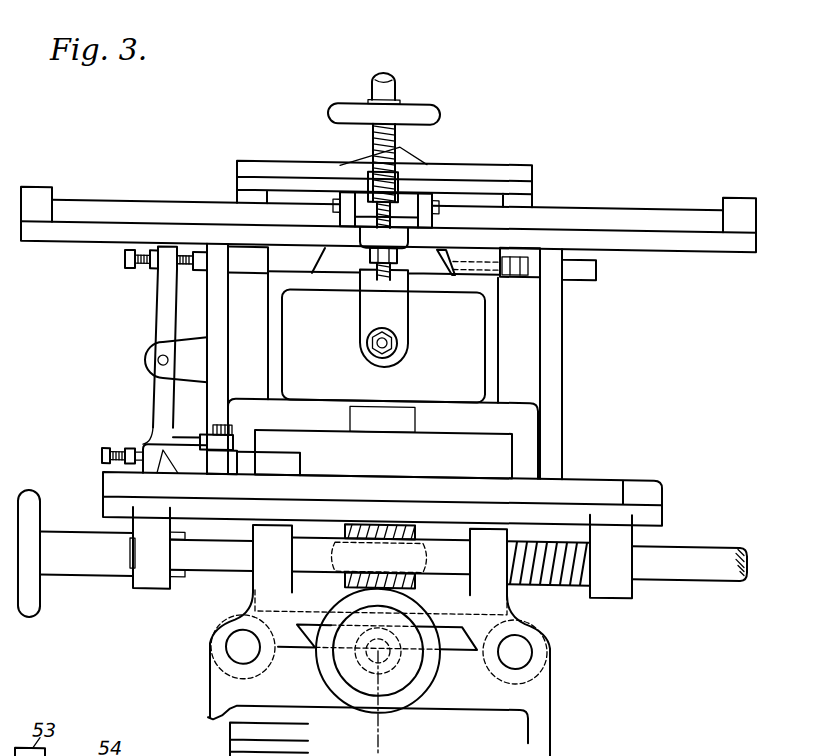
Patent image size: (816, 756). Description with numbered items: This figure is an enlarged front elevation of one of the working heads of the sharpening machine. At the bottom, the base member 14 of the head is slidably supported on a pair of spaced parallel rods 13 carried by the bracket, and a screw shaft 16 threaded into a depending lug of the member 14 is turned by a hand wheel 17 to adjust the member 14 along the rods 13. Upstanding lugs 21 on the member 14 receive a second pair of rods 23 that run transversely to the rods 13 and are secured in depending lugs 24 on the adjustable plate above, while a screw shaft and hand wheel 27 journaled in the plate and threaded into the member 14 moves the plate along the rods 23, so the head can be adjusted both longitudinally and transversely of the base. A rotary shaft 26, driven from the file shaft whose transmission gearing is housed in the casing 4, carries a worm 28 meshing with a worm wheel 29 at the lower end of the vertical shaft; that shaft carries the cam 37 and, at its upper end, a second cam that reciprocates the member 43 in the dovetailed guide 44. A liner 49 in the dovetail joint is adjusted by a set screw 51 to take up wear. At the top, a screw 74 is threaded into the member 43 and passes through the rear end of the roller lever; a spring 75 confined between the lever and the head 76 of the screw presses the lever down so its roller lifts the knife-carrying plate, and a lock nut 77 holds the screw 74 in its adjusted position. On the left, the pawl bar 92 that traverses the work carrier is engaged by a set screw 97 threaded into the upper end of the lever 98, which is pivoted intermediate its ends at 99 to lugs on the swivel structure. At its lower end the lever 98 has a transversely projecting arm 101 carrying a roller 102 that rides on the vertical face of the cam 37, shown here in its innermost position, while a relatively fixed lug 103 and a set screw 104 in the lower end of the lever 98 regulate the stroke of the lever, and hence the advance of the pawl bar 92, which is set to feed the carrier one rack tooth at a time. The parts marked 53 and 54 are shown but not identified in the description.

The casing 4 is at (382, 69).
The rods 13 is at (238, 642).
The member 14 is at (522, 605).
The screw shaft 16 is at (385, 651).
The hand wheel 17 is at (438, 673).
The upstanding lugs 21 is at (380, 560).
The rods 23 is at (212, 567).
The depending lugs 24 is at (630, 583).
The rotary shaft 26 is at (687, 544).
The screw shaft and hand wheel 27 is at (90, 567).
The worm 28 is at (383, 522).
The worm wheel 29 is at (430, 551).
The cam 37 is at (280, 459).
The slidable member 43 is at (384, 308).
The dovetailed guide 44 is at (328, 270).
The liner 49 is at (443, 268).
The set screw 51 is at (524, 270).
The end blocks 53 is at (39, 195).
The cross bar 54 is at (110, 198).
The screw 74 is at (408, 230).
The spring 75 is at (400, 141).
The head 76 is at (442, 110).
The lock nut 77 is at (398, 246).
The pawl bar 92 is at (242, 259).
The set screw 97 is at (147, 265).
The lever 98 is at (162, 302).
The pivot 99 is at (158, 358).
The transversely projecting arm 101 is at (199, 424).
The roller 102 is at (212, 459).
The lug 103 is at (160, 468).
The set screw 104 is at (115, 446).